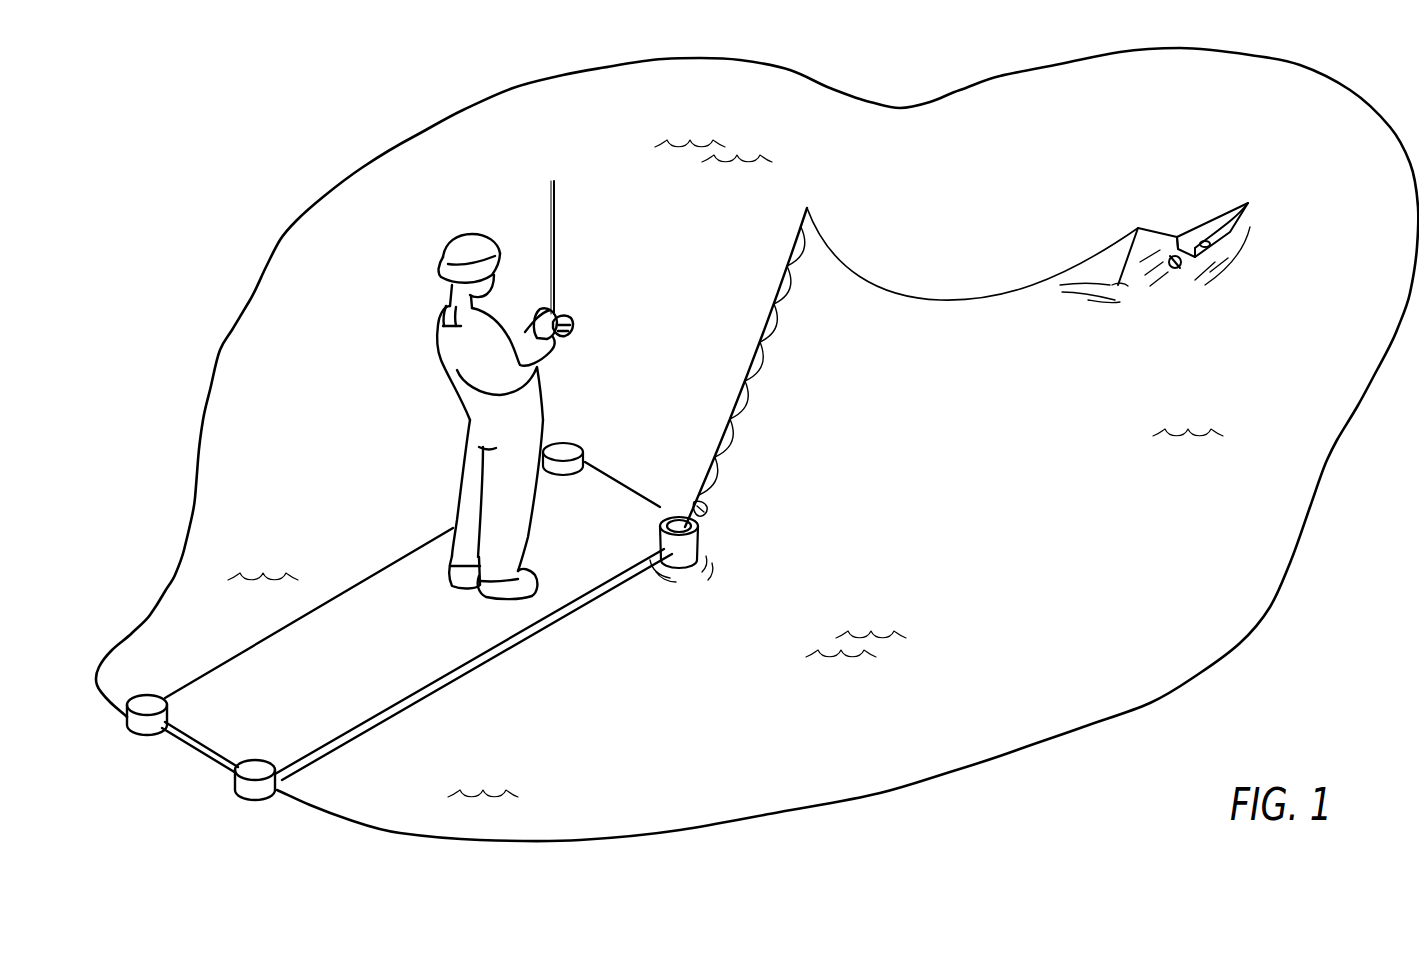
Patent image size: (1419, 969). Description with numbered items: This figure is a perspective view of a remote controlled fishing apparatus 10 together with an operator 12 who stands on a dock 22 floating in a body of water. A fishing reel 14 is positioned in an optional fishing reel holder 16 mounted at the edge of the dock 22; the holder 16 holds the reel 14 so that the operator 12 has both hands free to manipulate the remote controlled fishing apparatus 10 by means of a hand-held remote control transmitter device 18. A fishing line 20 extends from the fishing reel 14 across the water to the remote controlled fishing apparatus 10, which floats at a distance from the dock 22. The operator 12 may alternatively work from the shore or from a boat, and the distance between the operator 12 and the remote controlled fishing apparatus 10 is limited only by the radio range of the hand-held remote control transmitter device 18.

The remote controlled fishing apparatus 10 is at (1218, 208).
The operator 12 is at (437, 353).
The fishing reel 14 is at (706, 506).
The fishing reel holder 16 is at (675, 515).
The hand-held remote control transmitter device 18 is at (560, 310).
The fishing line 20 is at (933, 305).
The dock 22 is at (578, 608).